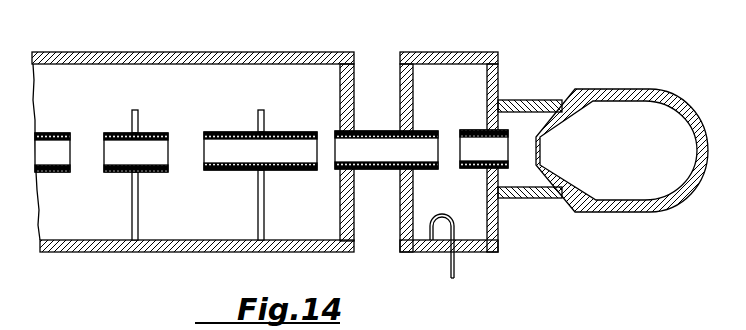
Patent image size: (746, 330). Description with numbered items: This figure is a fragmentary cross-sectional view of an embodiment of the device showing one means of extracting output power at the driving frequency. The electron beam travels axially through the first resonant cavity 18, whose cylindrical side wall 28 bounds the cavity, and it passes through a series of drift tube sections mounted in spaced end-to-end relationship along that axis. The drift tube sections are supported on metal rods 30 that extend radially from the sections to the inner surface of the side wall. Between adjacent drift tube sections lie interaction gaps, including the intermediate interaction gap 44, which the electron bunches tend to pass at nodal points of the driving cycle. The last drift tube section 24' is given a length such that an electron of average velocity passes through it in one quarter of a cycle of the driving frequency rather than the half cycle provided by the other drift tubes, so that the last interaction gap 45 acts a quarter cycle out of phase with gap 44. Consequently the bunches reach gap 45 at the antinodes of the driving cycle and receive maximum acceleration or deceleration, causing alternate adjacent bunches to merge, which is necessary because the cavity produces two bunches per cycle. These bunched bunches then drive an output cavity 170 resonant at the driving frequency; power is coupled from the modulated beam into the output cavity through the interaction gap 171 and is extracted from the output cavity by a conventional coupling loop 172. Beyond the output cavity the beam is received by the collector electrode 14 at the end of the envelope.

The collector electrode 14 is at (605, 89).
The first resonant cavity 18 is at (292, 81).
The cylindrical side wall 28 is at (206, 52).
The metal rods 30 is at (261, 203).
The interaction gap 44 is at (181, 146).
The last drift tube section 24' is at (257, 132).
The last interaction gap 45 is at (328, 141).
The output cavity 170 is at (454, 68).
The interaction gap 171 is at (451, 141).
The coupling loop 172 is at (457, 207).